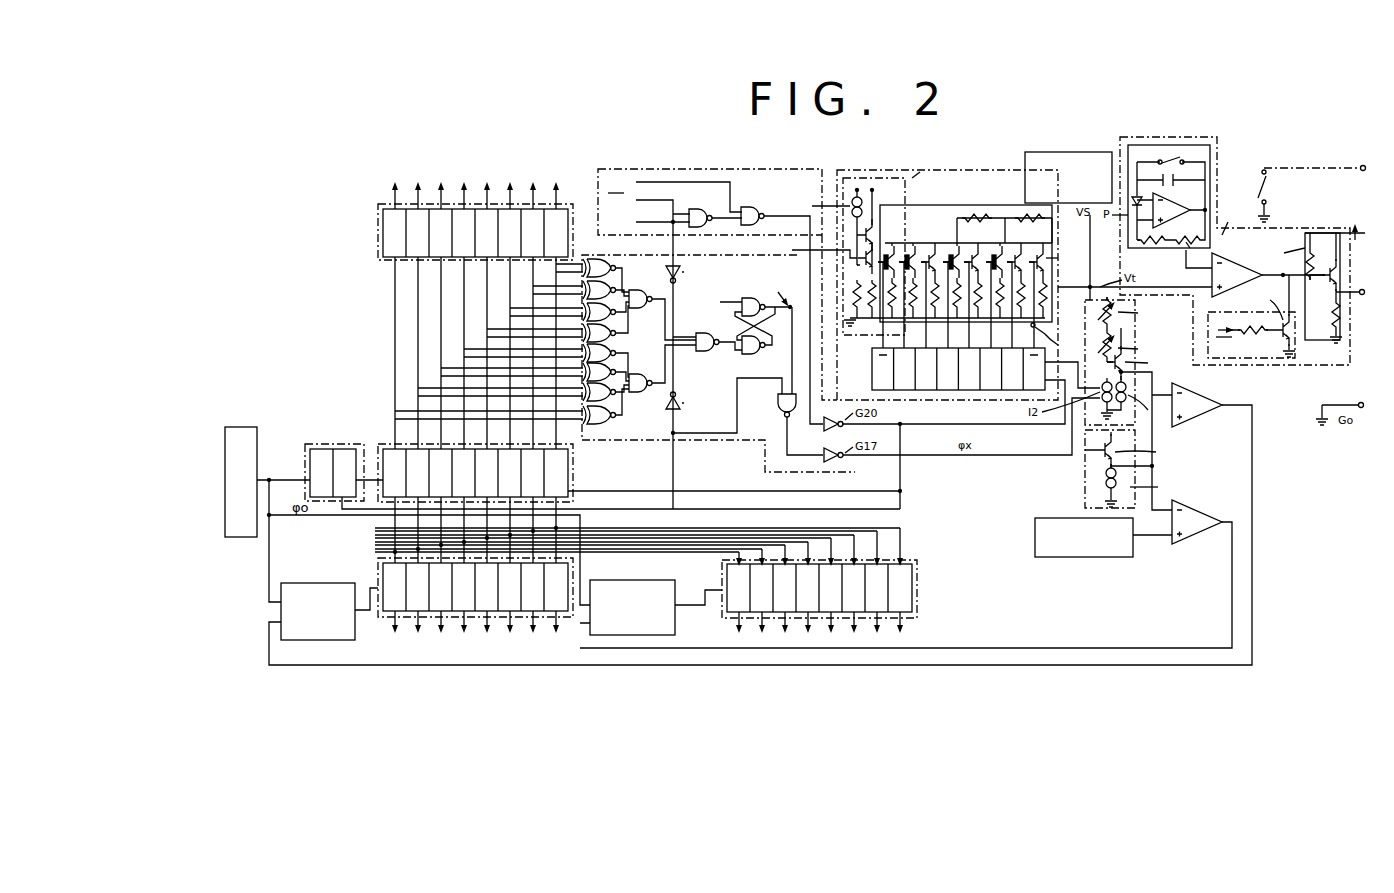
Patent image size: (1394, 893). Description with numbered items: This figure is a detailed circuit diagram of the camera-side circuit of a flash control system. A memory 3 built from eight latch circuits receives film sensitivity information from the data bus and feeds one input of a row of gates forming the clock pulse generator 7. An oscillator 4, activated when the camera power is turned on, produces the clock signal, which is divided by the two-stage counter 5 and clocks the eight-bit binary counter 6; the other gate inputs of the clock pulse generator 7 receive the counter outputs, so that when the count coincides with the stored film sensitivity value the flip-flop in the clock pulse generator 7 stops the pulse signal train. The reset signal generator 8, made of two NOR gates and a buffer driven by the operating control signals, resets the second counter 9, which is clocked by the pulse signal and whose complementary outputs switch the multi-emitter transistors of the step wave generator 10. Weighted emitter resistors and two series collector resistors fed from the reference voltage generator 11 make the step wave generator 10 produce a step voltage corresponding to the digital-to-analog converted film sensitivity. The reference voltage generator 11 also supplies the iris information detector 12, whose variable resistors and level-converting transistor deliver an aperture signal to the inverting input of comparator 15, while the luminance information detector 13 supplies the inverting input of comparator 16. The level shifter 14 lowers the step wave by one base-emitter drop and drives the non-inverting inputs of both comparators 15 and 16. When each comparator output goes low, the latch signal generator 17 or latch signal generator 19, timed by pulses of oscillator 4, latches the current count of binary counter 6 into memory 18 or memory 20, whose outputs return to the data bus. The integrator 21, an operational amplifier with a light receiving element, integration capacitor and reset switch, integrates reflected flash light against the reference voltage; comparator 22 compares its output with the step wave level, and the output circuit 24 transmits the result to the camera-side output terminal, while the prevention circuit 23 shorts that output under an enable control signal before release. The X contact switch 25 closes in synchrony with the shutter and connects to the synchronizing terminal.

The memory 3 is at (566, 204).
The oscillator 4 is at (238, 427).
The counter 5 is at (315, 444).
The binary counter 6 is at (578, 486).
The clock pulse generator 7 is at (715, 260).
The reset signal generator 8 is at (705, 169).
The counter 9 is at (908, 402).
The step wave generator 10 is at (918, 199).
The reference voltage generator 11 is at (1065, 152).
The iris information detector 12 is at (1135, 334).
The luminance information detector 13 is at (1083, 557).
The level shifter 14 is at (1092, 489).
The comparator 15 is at (1195, 405).
The comparator 16 is at (1195, 522).
The latch signal generator 17 is at (337, 583).
The memory 18 is at (578, 575).
The latch signal generator 19 is at (675, 626).
The memory 20 is at (918, 597).
The integrator 21 is at (1193, 145).
The comparator 22 is at (1240, 262).
The prevention circuit 23 is at (1260, 358).
The output circuit 24 is at (1318, 340).
The X contact switch 25 is at (1268, 185).